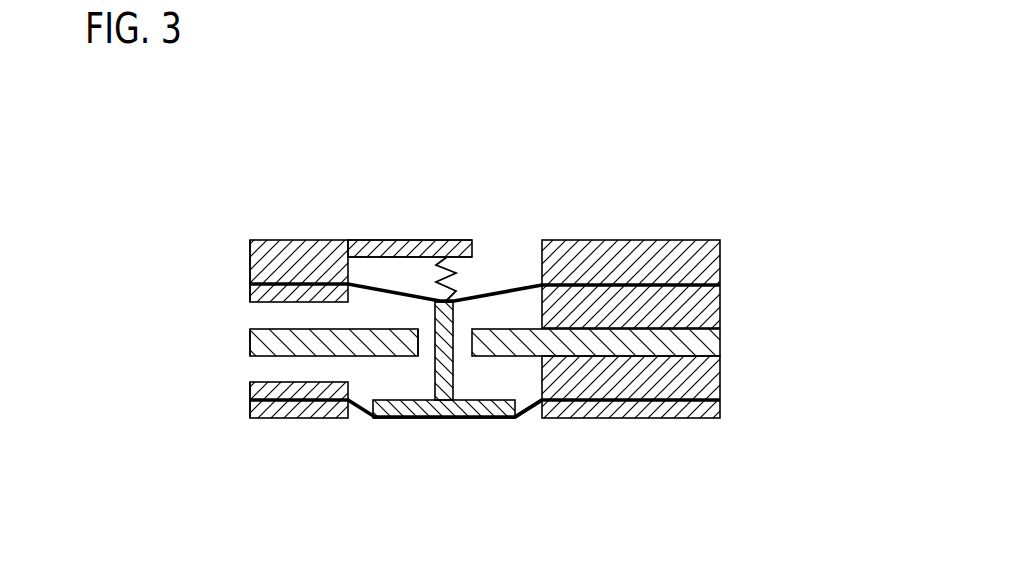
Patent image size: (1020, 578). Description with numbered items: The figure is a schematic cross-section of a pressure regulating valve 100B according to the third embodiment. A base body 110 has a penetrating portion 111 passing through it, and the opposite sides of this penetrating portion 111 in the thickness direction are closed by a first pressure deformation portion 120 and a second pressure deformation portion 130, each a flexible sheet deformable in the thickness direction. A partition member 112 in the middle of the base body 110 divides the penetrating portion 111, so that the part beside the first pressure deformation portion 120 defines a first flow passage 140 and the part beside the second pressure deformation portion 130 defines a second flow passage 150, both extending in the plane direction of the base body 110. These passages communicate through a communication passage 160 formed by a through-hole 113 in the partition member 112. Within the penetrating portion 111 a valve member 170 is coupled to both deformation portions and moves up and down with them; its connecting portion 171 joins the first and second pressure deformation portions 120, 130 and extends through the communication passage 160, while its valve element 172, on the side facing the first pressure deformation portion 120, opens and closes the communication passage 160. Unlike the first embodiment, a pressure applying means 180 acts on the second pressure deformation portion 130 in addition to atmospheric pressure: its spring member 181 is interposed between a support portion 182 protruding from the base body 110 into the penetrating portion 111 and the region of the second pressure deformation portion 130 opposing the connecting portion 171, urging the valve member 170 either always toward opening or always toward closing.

The pressure regulating valve 100B is at (607, 153).
The base body 110 is at (637, 240).
The penetrating portion 111 is at (519, 234).
The partition member 112 is at (513, 328).
The through-hole 113 is at (429, 342).
The first pressure deformation portion 120 is at (523, 412).
The second pressure deformation portion 130 is at (364, 285).
The first flow passage 140 is at (362, 395).
The second flow passage 150 is at (412, 273).
The communication passage 160 is at (458, 343).
The valve member 170 is at (466, 307).
The connecting portion 171 is at (438, 368).
The valve element 172 is at (477, 403).
The pressure applying means 180 is at (458, 228).
The spring member 181 is at (421, 240).
The support portion 182 is at (447, 240).